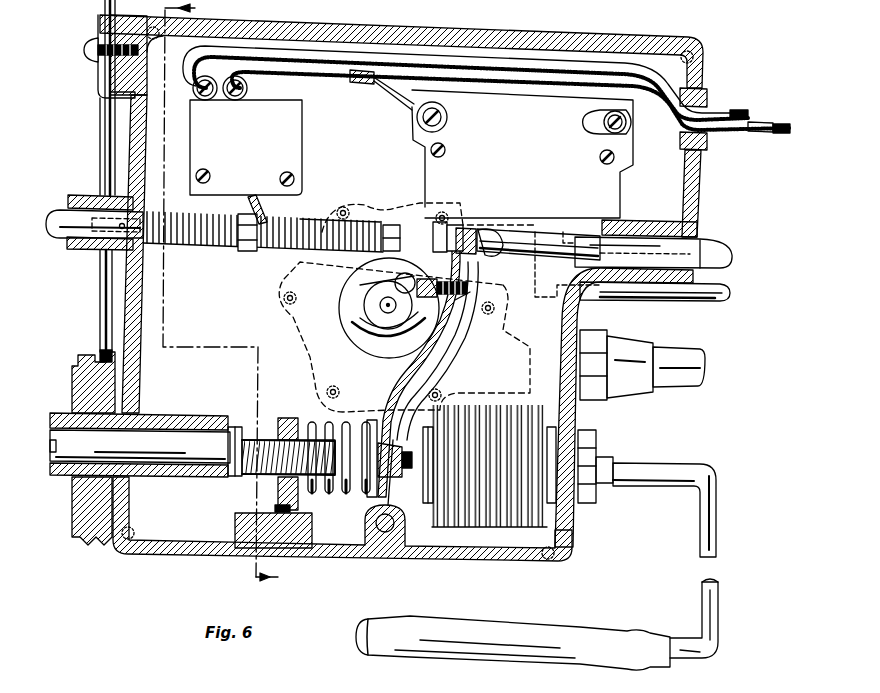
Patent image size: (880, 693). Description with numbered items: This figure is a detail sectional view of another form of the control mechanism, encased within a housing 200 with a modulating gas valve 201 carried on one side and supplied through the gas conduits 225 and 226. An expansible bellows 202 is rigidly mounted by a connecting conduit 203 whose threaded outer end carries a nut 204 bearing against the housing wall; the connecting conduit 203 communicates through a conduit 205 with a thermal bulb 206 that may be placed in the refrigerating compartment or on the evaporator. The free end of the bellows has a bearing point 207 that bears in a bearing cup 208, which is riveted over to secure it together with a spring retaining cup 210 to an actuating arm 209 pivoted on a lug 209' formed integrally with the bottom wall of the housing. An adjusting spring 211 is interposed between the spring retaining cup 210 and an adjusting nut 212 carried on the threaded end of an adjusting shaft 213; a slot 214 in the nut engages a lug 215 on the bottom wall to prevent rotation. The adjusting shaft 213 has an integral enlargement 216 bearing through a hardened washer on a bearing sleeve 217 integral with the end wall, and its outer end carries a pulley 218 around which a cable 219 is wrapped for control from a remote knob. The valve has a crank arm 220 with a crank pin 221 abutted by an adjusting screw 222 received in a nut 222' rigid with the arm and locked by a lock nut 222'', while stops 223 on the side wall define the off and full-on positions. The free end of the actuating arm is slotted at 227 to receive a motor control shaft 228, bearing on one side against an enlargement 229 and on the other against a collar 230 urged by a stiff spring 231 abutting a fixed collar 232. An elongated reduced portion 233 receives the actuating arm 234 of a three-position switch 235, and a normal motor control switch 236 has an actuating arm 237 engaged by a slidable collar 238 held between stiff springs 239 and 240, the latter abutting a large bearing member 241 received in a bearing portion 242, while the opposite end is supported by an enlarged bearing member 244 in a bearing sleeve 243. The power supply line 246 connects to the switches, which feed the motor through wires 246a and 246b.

The housing 200 is at (372, 28).
The modulating gas valve 201 is at (300, 343).
The expansible bellows 202 is at (500, 525).
The connecting conduit 203 is at (585, 481).
The nut 204 is at (592, 446).
The conduit 205 is at (707, 541).
The thermal bulb 206 is at (560, 628).
The bearing point 207 is at (410, 505).
The bearing cup 208 is at (385, 400).
The actuating arm 209 is at (446, 383).
The lug 209' is at (407, 552).
The spring retaining cup 210 is at (368, 500).
The adjusting spring 211 is at (318, 482).
The adjusting nut 212 is at (285, 420).
The adjusting shaft 213 is at (192, 452).
The slot 214 is at (276, 508).
The lug 215 is at (262, 528).
The integral enlargement 216 is at (238, 420).
The bearing sleeve 217 is at (188, 420).
The pulley 218 is at (78, 507).
The cable 219 is at (102, 305).
The crank arm 220 is at (372, 312).
The crank pin 221 is at (398, 279).
The adjusting screw 222 is at (388, 329).
The nut 222' is at (475, 290).
The lock nut 222'' is at (491, 320).
The stops 223 is at (357, 292).
The gas conduit 225 is at (712, 290).
The gas conduit 226 is at (685, 372).
The slot 227 is at (450, 222).
The motor control shaft 228 is at (216, 217).
The enlargement 229 is at (478, 252).
The collar 230 is at (413, 211).
The stiff spring 231 is at (395, 218).
The collar 232 is at (385, 226).
The elongated reduced portion 233 is at (518, 243).
The actuating arm 234 is at (490, 240).
The three-position switch 235 is at (522, 154).
The normal motor control switch 236 is at (246, 135).
The actuating arm 237 is at (263, 213).
The collar 238 is at (247, 251).
The stiff spring 239 is at (312, 222).
The stiff spring 240 is at (175, 243).
The large bearing member 241 is at (67, 215).
The bearing portion 242 is at (92, 250).
The bearing sleeve 243 is at (633, 236).
The enlarged bearing member 244 is at (683, 247).
The power supply line 246 is at (700, 103).
The wire 246a is at (745, 113).
The wire 246b is at (727, 129).